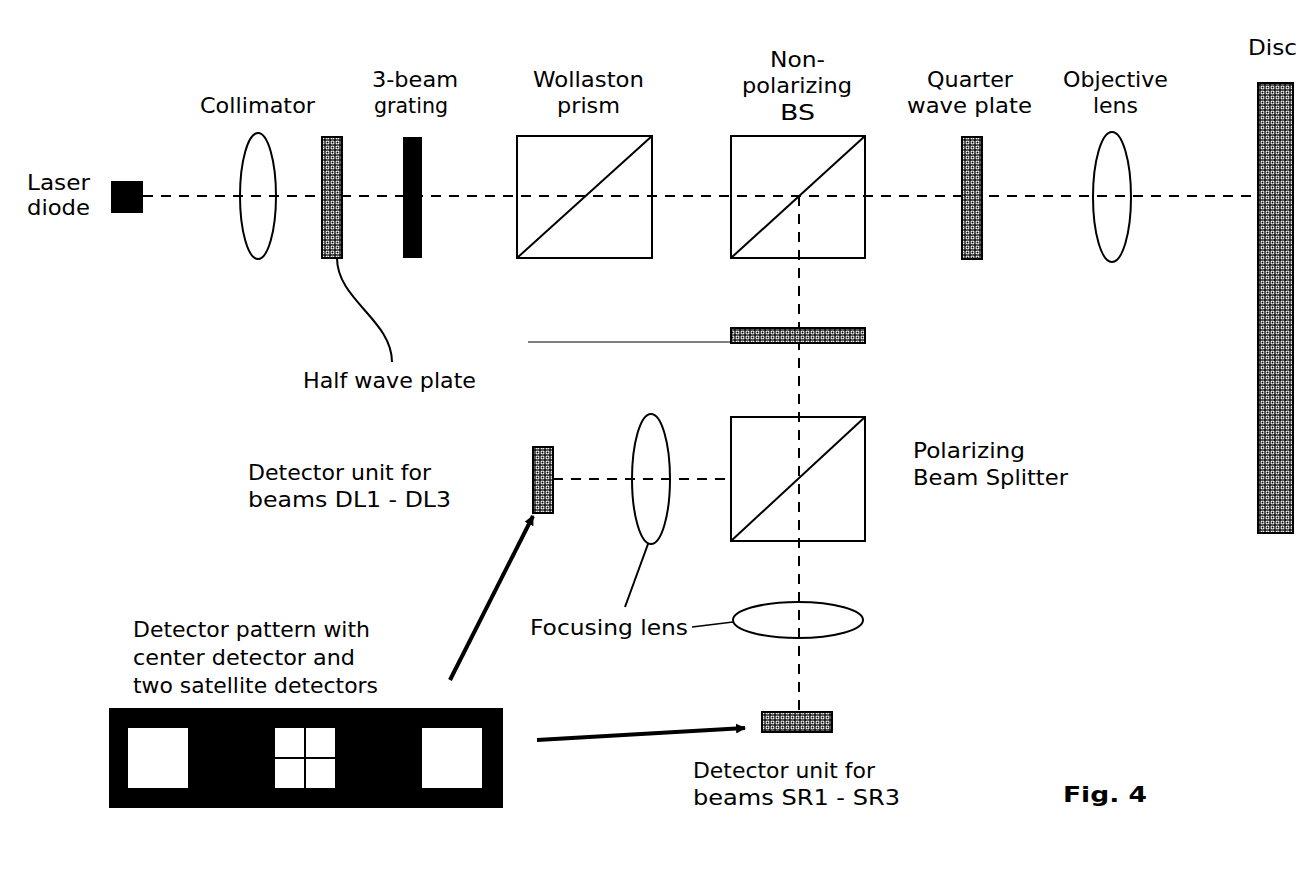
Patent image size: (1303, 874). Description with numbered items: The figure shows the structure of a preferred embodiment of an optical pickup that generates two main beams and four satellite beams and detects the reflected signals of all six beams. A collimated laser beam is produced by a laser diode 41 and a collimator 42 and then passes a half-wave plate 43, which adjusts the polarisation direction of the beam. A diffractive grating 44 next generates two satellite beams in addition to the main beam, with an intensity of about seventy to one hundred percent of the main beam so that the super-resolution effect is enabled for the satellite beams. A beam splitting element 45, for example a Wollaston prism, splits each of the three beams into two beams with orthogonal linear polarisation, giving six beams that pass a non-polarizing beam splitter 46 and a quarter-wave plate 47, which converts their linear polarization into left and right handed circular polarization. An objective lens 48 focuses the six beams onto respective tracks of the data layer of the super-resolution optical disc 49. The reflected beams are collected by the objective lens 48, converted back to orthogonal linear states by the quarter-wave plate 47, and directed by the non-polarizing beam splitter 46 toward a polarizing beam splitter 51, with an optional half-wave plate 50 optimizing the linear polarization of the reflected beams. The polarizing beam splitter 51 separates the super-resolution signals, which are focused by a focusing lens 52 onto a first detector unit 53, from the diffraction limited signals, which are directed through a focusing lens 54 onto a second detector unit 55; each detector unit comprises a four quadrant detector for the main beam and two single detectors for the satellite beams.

The laser diode 41 is at (128, 213).
The collimator 42 is at (258, 260).
The half-wave plate 43 is at (330, 258).
The diffractive grating 44 is at (412, 258).
The beam splitting element 45 is at (592, 258).
The non-polarizing beam splitter 46 is at (843, 258).
The quarter-wave plate 47 is at (972, 259).
The objective lens 48 is at (1112, 262).
The super-resolution optical disc 49 is at (1258, 372).
The half-wave plate 50 is at (865, 343).
The polarizing beam splitter 51 is at (865, 528).
The focusing lens 52 is at (863, 622).
The first detector unit 53 is at (832, 718).
The focusing lens 54 is at (650, 417).
The second detector unit 55 is at (543, 447).